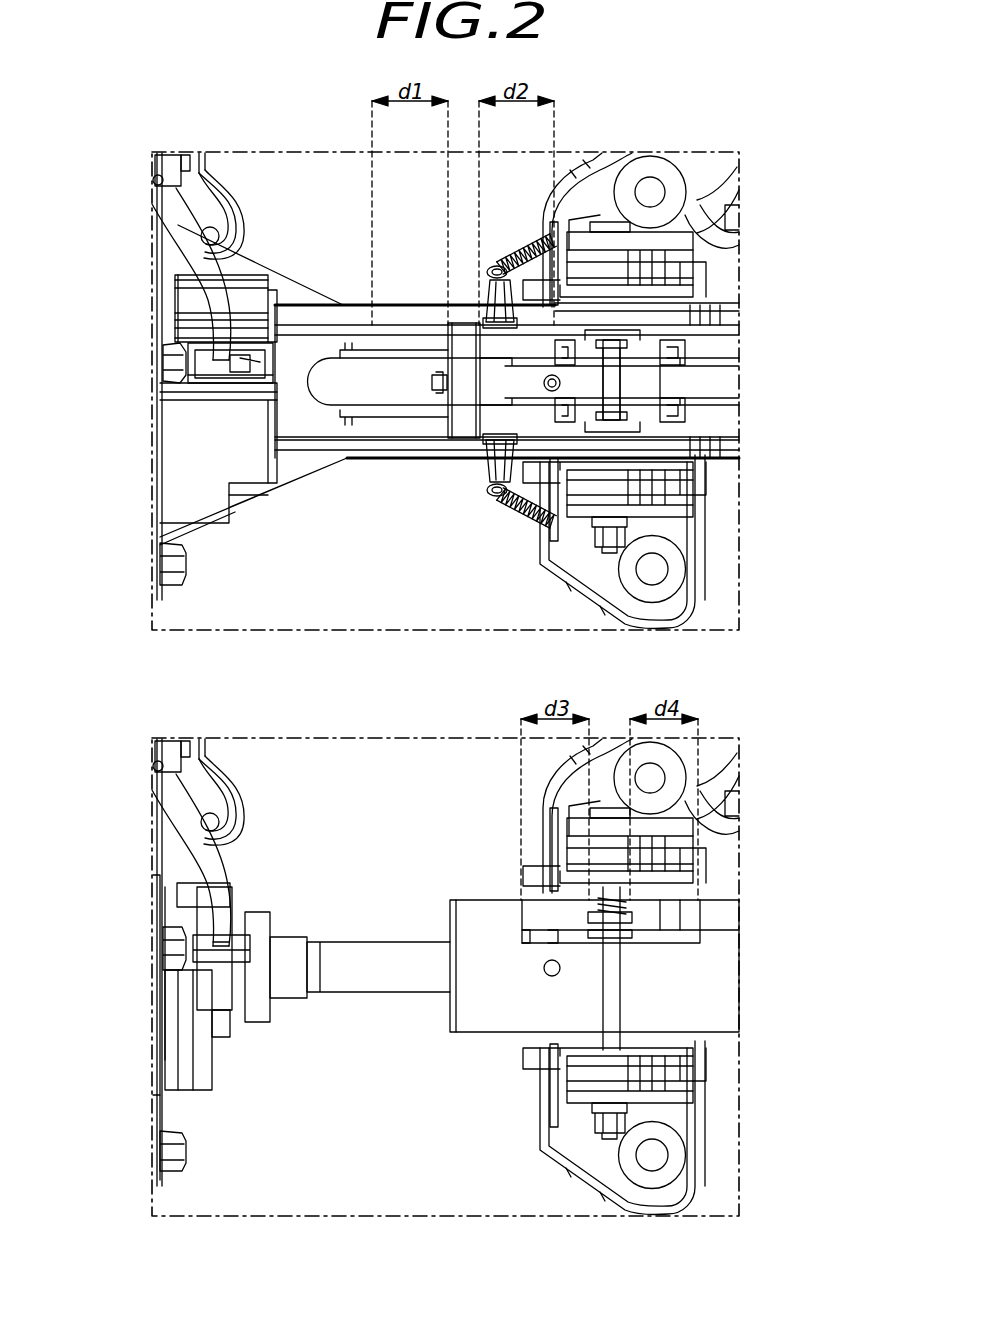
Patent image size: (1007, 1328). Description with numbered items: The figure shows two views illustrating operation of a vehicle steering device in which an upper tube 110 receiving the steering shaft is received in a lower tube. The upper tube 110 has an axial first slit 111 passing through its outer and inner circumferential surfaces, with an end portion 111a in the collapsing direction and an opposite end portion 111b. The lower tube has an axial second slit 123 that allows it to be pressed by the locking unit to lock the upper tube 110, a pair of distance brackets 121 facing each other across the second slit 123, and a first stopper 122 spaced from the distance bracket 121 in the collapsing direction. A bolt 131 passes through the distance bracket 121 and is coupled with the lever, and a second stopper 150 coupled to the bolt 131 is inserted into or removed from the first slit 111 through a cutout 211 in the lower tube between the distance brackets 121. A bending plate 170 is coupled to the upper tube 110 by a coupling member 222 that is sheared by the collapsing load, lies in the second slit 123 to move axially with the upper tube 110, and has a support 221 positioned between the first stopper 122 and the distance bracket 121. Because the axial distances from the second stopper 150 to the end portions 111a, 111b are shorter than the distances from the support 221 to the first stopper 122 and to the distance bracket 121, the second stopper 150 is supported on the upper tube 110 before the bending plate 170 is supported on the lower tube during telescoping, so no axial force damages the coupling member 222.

The upper tube 110 is at (727, 975).
The first slit 111 is at (688, 942).
The end portion of the slit 111a is at (517, 927).
The opposite end portion of the slit 111b is at (670, 940).
The distance bracket 121 is at (655, 320).
The first stopper 122 is at (355, 408).
The second slit 123 is at (393, 390).
The bolt 131 is at (640, 412).
The second stopper 150 is at (611, 332).
The bending plate 170 is at (722, 382).
The cutout 211 is at (627, 354).
The support 221 is at (465, 425).
The coupling member 222 is at (544, 395).